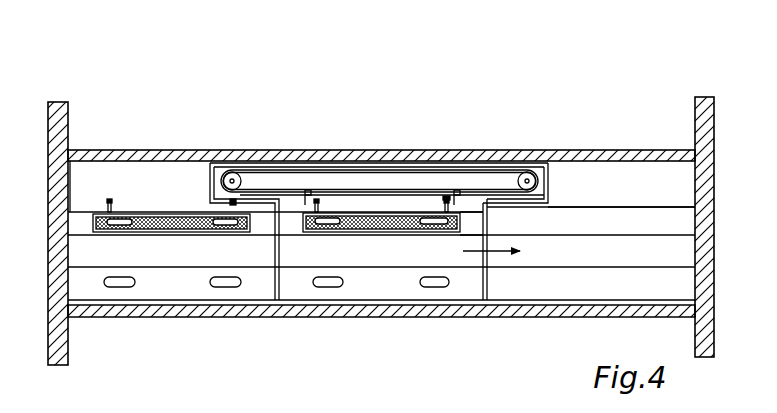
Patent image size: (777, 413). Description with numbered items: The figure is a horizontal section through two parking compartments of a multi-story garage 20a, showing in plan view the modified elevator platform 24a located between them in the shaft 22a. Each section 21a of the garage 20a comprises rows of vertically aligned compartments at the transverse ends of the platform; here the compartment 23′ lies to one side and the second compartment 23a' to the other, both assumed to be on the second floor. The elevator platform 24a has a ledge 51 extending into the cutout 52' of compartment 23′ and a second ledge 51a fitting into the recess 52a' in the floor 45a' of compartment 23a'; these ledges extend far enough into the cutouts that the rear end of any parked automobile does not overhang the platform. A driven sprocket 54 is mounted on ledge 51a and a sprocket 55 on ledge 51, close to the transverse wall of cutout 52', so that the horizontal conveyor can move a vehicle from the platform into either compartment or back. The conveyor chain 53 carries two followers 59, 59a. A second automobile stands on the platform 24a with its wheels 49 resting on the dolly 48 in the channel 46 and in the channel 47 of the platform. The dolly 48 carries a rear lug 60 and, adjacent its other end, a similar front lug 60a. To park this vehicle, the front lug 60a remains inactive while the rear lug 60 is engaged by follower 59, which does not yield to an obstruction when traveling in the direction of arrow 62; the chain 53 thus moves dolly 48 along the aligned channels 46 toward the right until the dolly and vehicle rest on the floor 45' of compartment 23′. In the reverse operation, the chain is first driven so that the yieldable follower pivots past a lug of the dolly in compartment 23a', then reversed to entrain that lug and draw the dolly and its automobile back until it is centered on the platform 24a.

The garage 20a is at (502, 55).
The section 21a is at (50, 262).
The shaft 22a is at (432, 320).
The compartment 23′ is at (636, 150).
The second compartment 23a' is at (381, 346).
The elevator platform 24a is at (363, 255).
The floor 45' is at (622, 135).
The floor 45a' is at (104, 138).
The channel 46 is at (473, 220).
The channel 47 is at (478, 288).
The dolly 48 is at (167, 217).
The wheels 49 is at (113, 222).
The ledge 51 is at (551, 190).
The second ledge 51a is at (203, 223).
The cutout 52' is at (433, 129).
The recess 52a' is at (232, 182).
The chain 53 is at (383, 170).
The driven sprocket 54 is at (233, 178).
The sprocket 55 is at (527, 178).
The follower 59 is at (310, 200).
The follower 59a is at (457, 192).
The lug 60 is at (108, 202).
The lug 60a is at (235, 205).
The arrow 62 is at (500, 252).